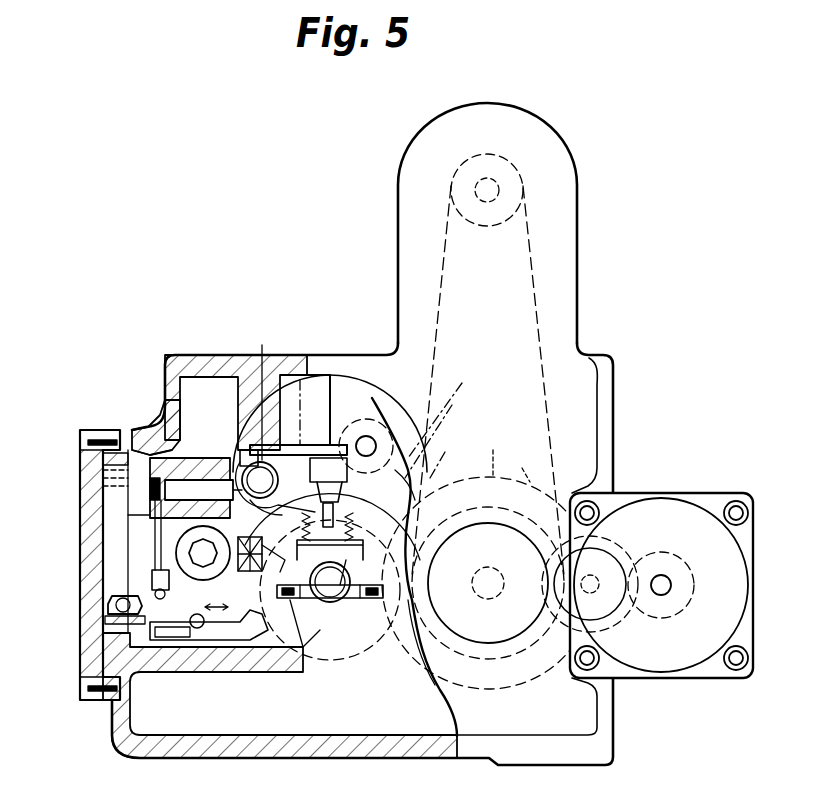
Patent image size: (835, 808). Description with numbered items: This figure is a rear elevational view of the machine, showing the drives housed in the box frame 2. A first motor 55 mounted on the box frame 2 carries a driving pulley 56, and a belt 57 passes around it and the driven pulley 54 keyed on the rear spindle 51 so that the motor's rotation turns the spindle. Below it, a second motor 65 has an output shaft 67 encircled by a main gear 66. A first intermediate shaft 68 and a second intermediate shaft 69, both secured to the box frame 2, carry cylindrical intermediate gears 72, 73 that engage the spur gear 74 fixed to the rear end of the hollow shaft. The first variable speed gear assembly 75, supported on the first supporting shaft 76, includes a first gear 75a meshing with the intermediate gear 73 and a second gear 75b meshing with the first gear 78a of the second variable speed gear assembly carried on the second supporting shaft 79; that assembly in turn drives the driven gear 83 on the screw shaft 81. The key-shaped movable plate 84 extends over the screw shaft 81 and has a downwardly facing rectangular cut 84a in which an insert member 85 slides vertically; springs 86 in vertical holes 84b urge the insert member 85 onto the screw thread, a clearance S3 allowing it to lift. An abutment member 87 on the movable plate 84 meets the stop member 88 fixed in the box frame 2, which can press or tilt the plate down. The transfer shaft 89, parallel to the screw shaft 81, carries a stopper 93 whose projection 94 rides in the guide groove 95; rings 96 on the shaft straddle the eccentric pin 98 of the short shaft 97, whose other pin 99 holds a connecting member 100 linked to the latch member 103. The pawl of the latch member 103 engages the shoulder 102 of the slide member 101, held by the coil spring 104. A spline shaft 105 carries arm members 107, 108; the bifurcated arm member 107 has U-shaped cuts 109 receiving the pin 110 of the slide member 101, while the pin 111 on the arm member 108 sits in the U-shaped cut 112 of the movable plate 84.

The box frame 2 is at (165, 408).
The rear spindle 51 is at (496, 600).
The driven pulley 54 is at (487, 689).
The first motor 55 is at (579, 170).
The driving pulley 56 is at (508, 162).
The belt 57 is at (536, 226).
The second motor 65 is at (755, 532).
The main gear 66 is at (690, 592).
The output shaft 67 is at (666, 576).
The first intermediate shaft 68 is at (592, 548).
The second intermediate shaft 69 is at (463, 488).
The intermediate gear 72 is at (628, 554).
The intermediate gear 73 is at (442, 456).
The spur gear 74 is at (522, 464).
The first variable speed gear assembly 75 is at (440, 386).
The first gear 75a is at (438, 408).
The second gear 75b is at (428, 432).
The first supporting shaft 76 is at (378, 436).
The first gear 78a is at (298, 415).
The second supporting shaft 79 is at (316, 402).
The screw shaft 81 is at (342, 602).
The driven gear 83 is at (366, 650).
The movable plate 84 is at (409, 514).
The rectangular cut 84a is at (360, 600).
The vertical holes 84b is at (300, 598).
The insert member 85 is at (322, 600).
The spring 86 is at (406, 473).
The abutment member 87 is at (340, 486).
The stop member 88 is at (364, 436).
The transfer shaft 89 is at (247, 450).
The stopper 93 is at (296, 442).
The projection 94 is at (268, 440).
The guide groove 95 is at (255, 390).
The rings 96 is at (250, 466).
The short shaft 97 is at (156, 426).
The pin 98 is at (222, 460).
The pin 99 is at (150, 480).
The connecting member 100 is at (155, 505).
The slide member 101 is at (292, 660).
The shoulder 102 is at (172, 645).
The latch member 103 is at (114, 589).
The coil spring 104 is at (108, 632).
The spline shaft 105 is at (195, 553).
The arm member 107 is at (242, 640).
The arm member 108 is at (262, 650).
The U-shaped cuts 109 is at (206, 640).
The pin 110 is at (196, 645).
The pin 111 is at (154, 532).
The U-shaped cut 112 is at (308, 650).
The clearance S3 is at (332, 577).